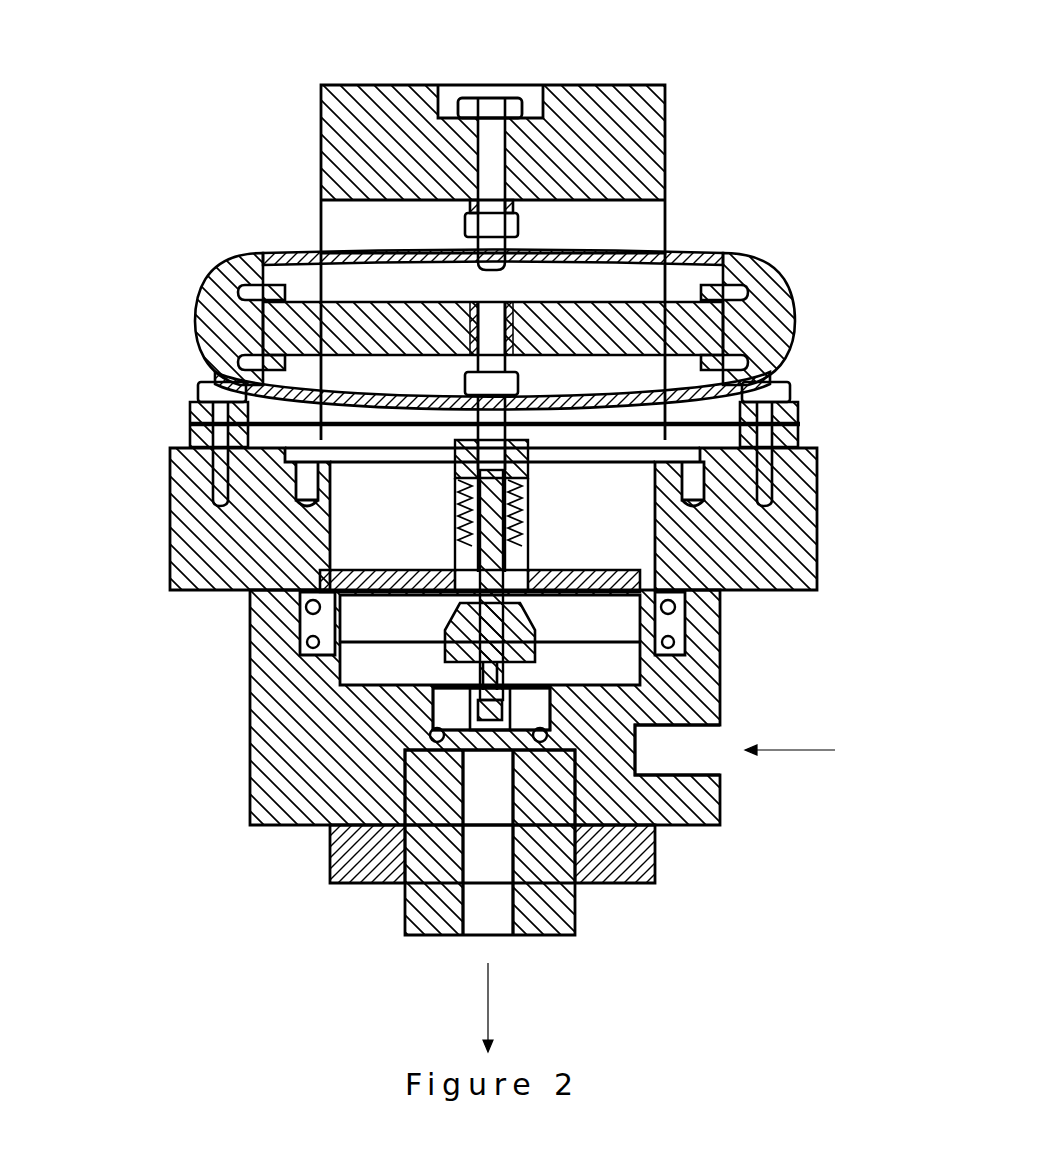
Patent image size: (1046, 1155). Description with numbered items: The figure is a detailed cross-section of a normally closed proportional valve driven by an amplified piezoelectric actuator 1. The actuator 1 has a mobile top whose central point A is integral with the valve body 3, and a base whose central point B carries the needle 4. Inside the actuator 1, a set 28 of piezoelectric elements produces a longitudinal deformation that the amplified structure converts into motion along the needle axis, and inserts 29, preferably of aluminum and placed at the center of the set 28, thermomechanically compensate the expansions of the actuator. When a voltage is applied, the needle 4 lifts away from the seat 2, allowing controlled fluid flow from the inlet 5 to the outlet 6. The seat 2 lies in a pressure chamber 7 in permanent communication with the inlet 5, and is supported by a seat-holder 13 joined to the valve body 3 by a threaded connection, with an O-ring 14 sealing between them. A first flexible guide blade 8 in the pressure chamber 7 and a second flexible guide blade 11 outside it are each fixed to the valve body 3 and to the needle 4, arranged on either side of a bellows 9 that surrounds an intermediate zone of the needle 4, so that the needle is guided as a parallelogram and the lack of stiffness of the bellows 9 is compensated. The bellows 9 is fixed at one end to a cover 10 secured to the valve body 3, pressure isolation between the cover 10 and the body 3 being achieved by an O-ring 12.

The amplified piezoelectric actuator 1 is at (738, 326).
The seat 2 is at (547, 697).
The valve body 3 is at (760, 580).
The needle 4 is at (530, 660).
The inlet 5 is at (700, 750).
The outlet 6 is at (486, 912).
The pressure chamber 7 is at (387, 668).
The first flexible guide blade 8 is at (600, 640).
The bellows 9 is at (455, 528).
The cover 10 is at (313, 642).
The second flexible guide blade 11 is at (705, 428).
The O-ring 12 is at (313, 607).
The seat-holder 13 is at (430, 912).
The O-ring 14 is at (437, 735).
The set of piezoelectric elements 28 is at (320, 322).
The inserts 29 is at (515, 300).
The point of the top A is at (487, 268).
The point of the base B is at (470, 418).